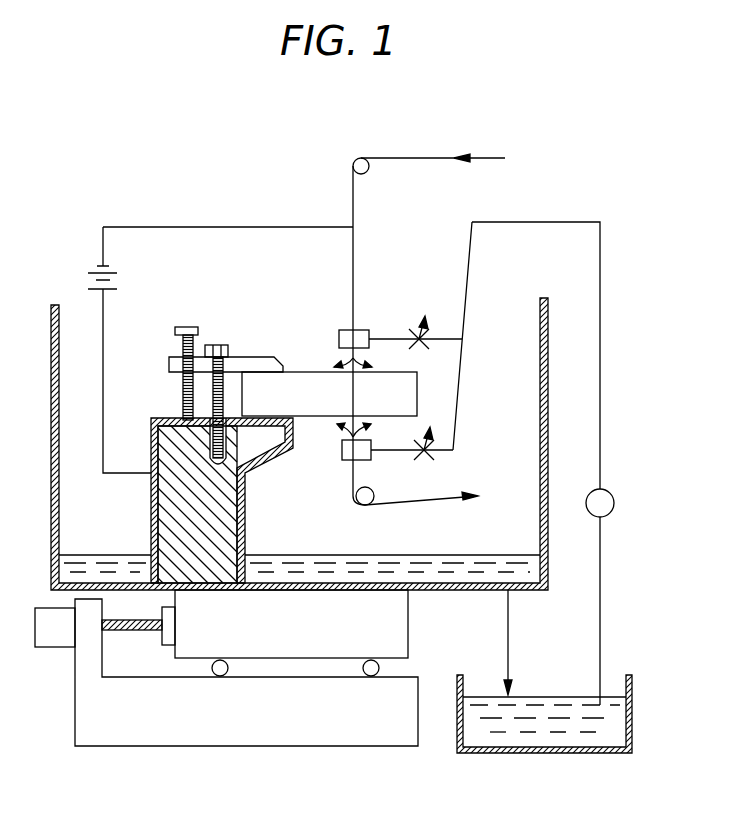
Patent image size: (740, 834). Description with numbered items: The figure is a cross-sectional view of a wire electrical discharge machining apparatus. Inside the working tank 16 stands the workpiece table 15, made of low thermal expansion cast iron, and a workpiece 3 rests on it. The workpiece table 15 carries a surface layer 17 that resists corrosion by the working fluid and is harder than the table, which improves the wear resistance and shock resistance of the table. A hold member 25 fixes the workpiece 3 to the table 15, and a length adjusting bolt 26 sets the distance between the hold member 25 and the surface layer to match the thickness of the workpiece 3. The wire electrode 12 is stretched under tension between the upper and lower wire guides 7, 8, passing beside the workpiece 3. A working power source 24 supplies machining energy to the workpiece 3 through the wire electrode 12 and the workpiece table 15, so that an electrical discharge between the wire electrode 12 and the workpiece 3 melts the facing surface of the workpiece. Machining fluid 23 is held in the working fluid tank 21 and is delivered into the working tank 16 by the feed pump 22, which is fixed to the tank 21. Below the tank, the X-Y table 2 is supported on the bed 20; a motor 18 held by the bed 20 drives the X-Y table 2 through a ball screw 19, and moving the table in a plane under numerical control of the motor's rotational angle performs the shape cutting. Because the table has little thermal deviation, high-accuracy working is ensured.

The X-Y table 2 is at (408, 628).
The workpiece 3 is at (308, 372).
The upper wire guide 7 is at (356, 330).
The lower wire guide 8 is at (342, 449).
The wire electrode 12 is at (414, 158).
The workpiece table 15 is at (165, 518).
The working tank 16 is at (548, 370).
The surface layer 17 is at (164, 418).
The motor 18 is at (45, 647).
The ball screw 19 is at (128, 630).
The bed 20 is at (372, 746).
The working fluid tank 21 is at (608, 753).
The feed pump 22 is at (614, 504).
The machining fluid 23 is at (493, 555).
The working power source 24 is at (93, 278).
The hold member 25 is at (176, 360).
The length adjusting bolt 26 is at (187, 327).